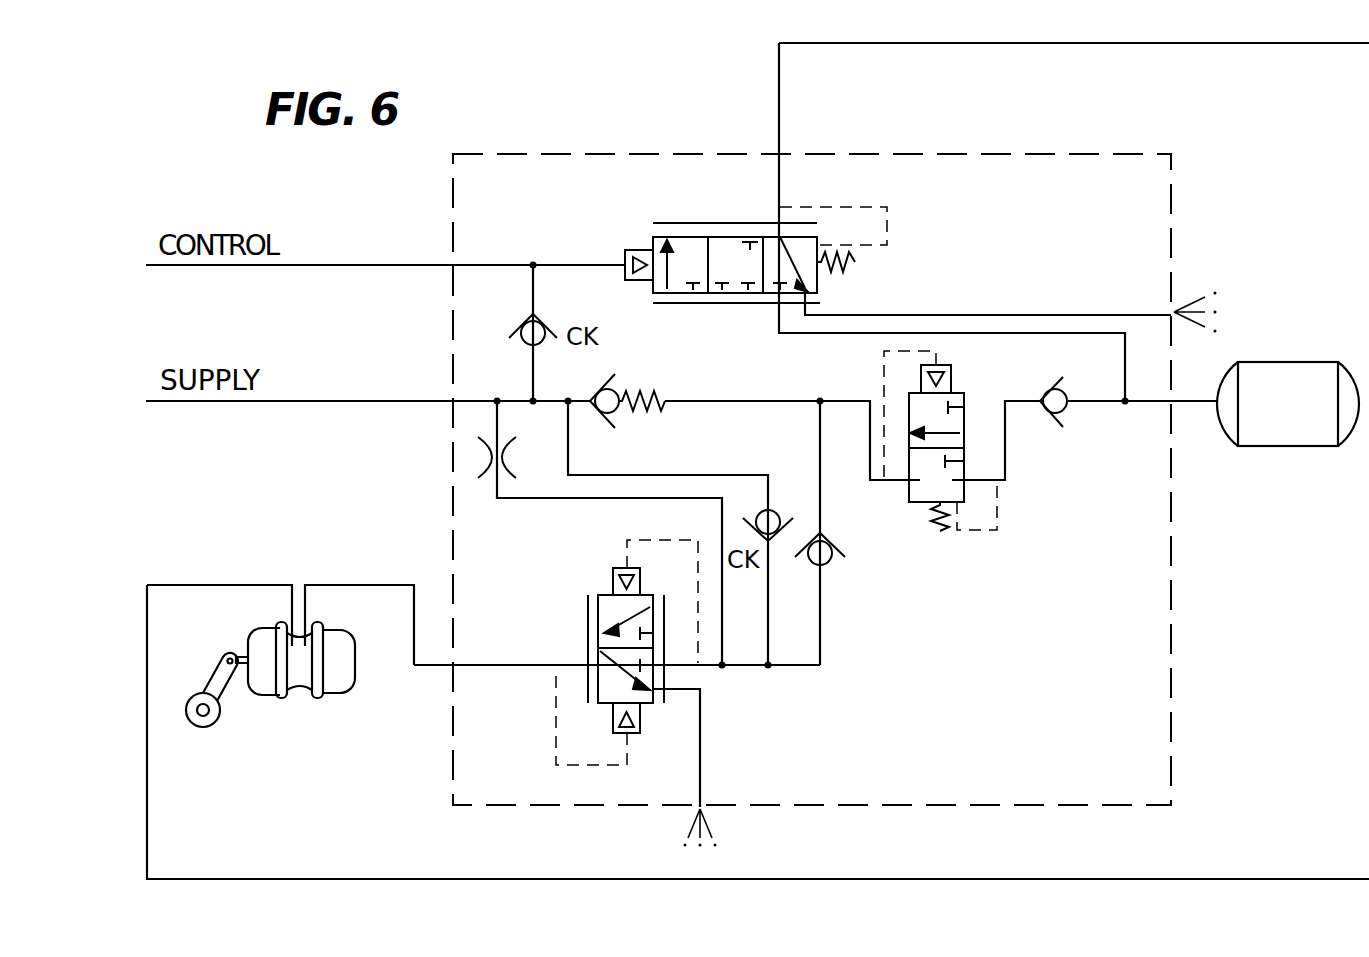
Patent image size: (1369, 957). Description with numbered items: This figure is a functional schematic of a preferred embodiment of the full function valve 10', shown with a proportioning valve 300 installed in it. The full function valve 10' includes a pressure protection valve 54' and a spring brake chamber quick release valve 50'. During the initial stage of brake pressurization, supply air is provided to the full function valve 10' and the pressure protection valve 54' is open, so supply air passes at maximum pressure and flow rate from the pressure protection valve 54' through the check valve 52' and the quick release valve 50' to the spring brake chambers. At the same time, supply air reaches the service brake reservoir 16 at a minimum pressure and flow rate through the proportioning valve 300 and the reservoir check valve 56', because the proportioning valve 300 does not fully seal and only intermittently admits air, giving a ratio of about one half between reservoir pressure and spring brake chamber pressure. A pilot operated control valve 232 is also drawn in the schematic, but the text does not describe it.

The full function valve 10' is at (812, 434).
The pilot operated control valve 232 is at (745, 243).
The pressure protection valve 54' is at (656, 388).
The spring brake chamber quick release valve 50' is at (603, 652).
The check valve 52' is at (844, 571).
The reservoir check valve 56' is at (1086, 431).
The proportioning valve 300 is at (941, 536).
The reservoir 16 is at (1285, 378).